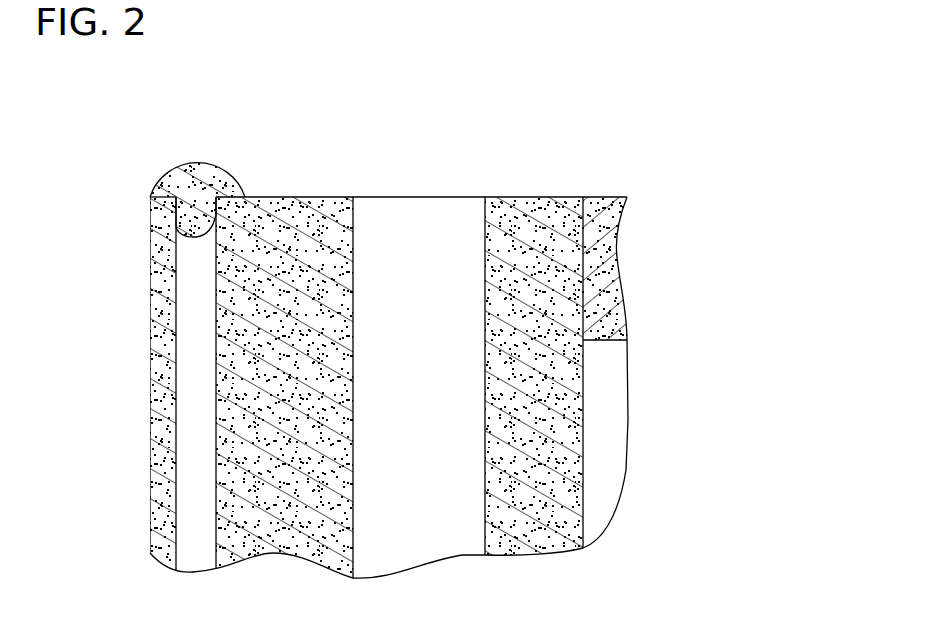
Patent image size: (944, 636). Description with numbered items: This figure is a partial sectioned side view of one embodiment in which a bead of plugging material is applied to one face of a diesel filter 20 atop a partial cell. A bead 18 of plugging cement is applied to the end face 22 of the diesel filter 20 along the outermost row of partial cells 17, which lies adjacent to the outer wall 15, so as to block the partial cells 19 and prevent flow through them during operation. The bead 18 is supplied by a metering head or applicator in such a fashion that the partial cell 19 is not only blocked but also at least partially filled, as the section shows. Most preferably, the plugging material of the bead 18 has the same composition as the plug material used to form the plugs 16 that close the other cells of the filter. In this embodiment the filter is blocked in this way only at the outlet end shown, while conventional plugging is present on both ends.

The outer wall 15 is at (158, 305).
The plugs 16 is at (597, 197).
The outermost row of partial cells 17 is at (159, 249).
The bead 18 is at (215, 145).
The partial cells 19 is at (187, 347).
The diesel filter 20 is at (120, 411).
The end face 22 is at (465, 185).